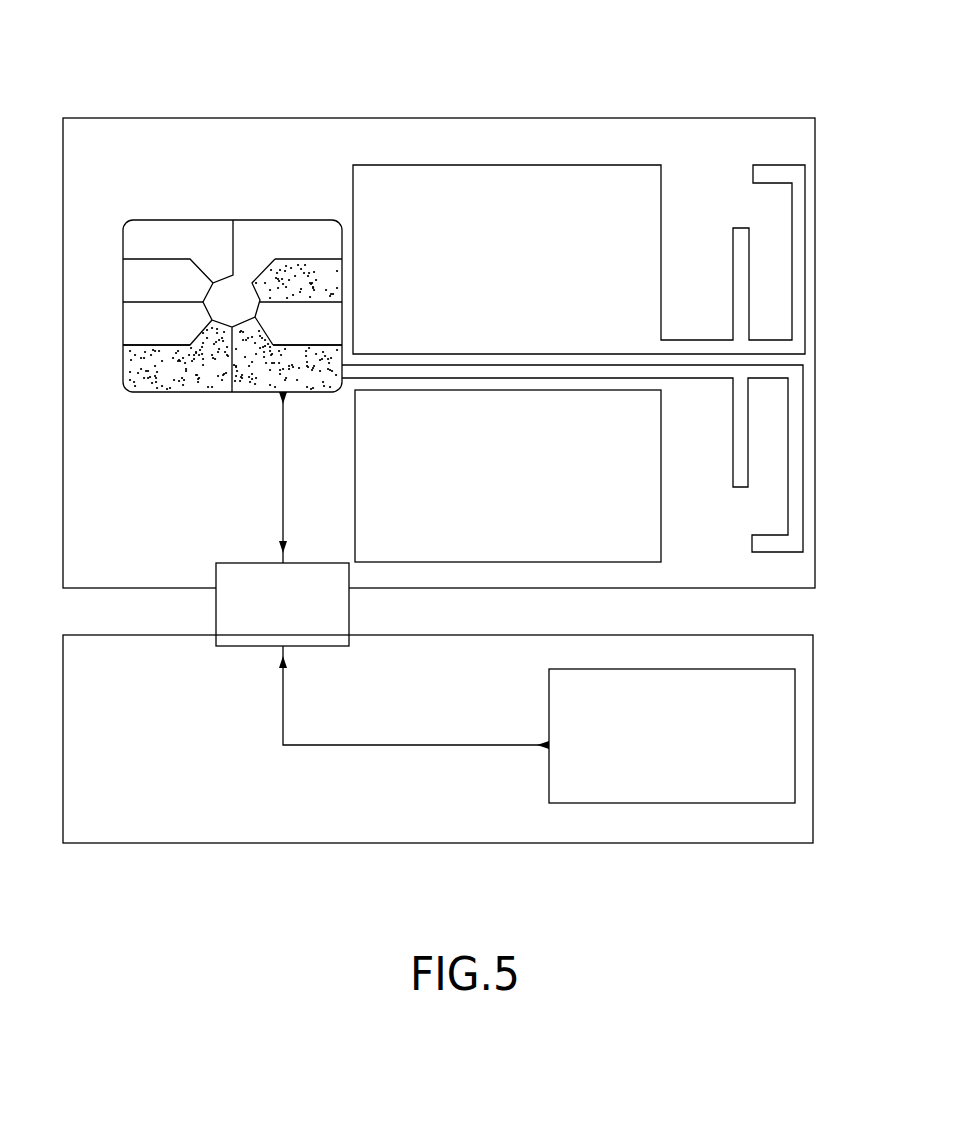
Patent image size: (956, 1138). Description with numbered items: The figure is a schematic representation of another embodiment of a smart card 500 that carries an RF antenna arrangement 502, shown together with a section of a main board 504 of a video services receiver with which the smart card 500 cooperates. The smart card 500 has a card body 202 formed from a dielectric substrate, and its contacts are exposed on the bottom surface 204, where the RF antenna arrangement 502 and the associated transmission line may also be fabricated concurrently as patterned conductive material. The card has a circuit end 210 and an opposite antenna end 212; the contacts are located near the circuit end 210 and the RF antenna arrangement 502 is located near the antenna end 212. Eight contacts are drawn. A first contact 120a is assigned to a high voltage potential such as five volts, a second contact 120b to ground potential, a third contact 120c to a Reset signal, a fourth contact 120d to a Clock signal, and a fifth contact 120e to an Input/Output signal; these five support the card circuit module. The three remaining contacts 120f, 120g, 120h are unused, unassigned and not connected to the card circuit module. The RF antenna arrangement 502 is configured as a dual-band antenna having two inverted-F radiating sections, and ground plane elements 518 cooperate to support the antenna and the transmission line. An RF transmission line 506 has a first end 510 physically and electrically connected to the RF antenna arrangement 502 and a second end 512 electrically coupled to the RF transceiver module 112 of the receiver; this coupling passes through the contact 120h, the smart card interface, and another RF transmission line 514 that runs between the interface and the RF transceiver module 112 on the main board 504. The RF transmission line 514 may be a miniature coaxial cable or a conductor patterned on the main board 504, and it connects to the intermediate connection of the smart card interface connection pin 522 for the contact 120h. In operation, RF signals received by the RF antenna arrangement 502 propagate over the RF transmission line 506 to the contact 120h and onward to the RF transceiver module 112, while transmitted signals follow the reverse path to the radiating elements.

The RF transceiver module 112 is at (549, 783).
The first contact 120a is at (180, 232).
The second contact 120b is at (262, 232).
The third contact 120c is at (137, 278).
The fourth contact 120d is at (135, 323).
The fifth contact 120e is at (333, 322).
The contact 120f is at (336, 268).
The contact 120g is at (178, 383).
The contact 120h is at (265, 378).
The card body 202 is at (287, 128).
The bottom surface 204 is at (547, 130).
The circuit end 210 is at (132, 86).
The antenna end 212 is at (796, 88).
The smart card 500 is at (390, 118).
The RF antenna arrangement 502 is at (706, 232).
The main board 504 is at (503, 634).
The RF transmission line 506 is at (595, 378).
The first end 510 is at (674, 398).
The second end 512 is at (288, 426).
The RF transmission line 514 is at (284, 676).
The ground plane elements 518 is at (528, 206).
The smart card interface connection pin 522 is at (233, 563).